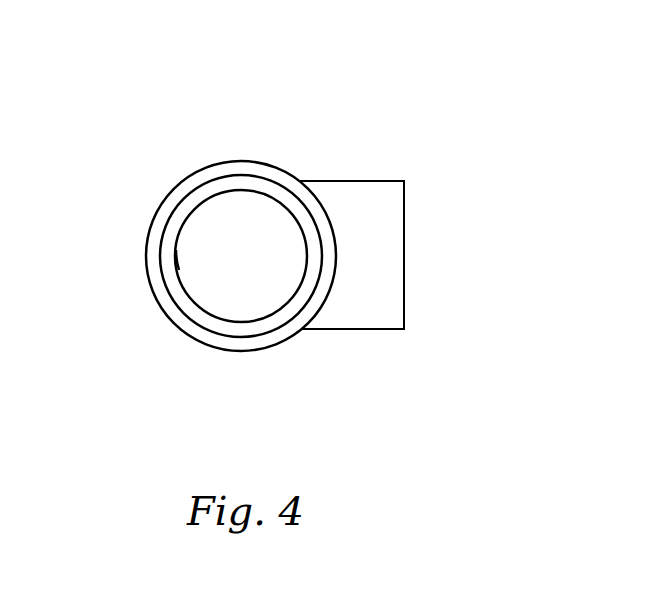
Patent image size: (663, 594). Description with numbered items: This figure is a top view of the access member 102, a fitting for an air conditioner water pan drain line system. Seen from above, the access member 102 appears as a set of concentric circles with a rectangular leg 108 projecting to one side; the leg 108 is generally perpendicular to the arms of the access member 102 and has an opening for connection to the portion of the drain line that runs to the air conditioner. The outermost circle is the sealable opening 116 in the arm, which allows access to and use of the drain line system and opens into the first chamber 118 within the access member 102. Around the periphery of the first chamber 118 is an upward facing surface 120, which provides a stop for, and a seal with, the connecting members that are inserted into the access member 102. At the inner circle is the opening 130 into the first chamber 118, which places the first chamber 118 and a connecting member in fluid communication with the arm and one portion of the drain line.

The access member 102 is at (479, 122).
The leg 108 is at (347, 181).
The sealable opening 116 is at (270, 336).
The first chamber 118 is at (212, 215).
The upward facing surface 120 is at (233, 183).
The opening 130 is at (186, 291).